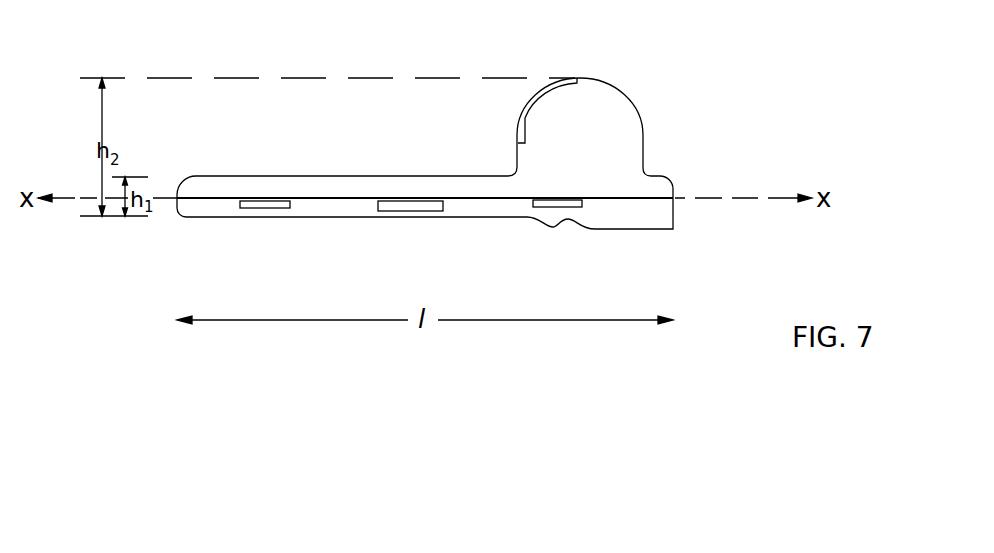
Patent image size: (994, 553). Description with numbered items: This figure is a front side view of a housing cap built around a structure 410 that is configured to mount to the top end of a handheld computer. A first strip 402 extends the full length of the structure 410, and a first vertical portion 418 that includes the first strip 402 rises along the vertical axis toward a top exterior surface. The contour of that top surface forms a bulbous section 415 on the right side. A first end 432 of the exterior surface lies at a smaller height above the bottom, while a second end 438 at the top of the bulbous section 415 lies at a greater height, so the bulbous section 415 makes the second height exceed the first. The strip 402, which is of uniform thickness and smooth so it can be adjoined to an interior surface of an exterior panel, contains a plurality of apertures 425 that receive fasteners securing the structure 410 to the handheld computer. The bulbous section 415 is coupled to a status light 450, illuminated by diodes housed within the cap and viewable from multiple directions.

The structure 410 is at (456, 142).
The first strip 402 is at (197, 210).
The bulbous section 415 is at (606, 126).
The first vertical portion 418 is at (606, 172).
The apertures 425 is at (260, 208).
The first end of exterior surface 432 is at (227, 174).
The second end of exterior surface 438 is at (607, 78).
The status light 450 is at (527, 108).